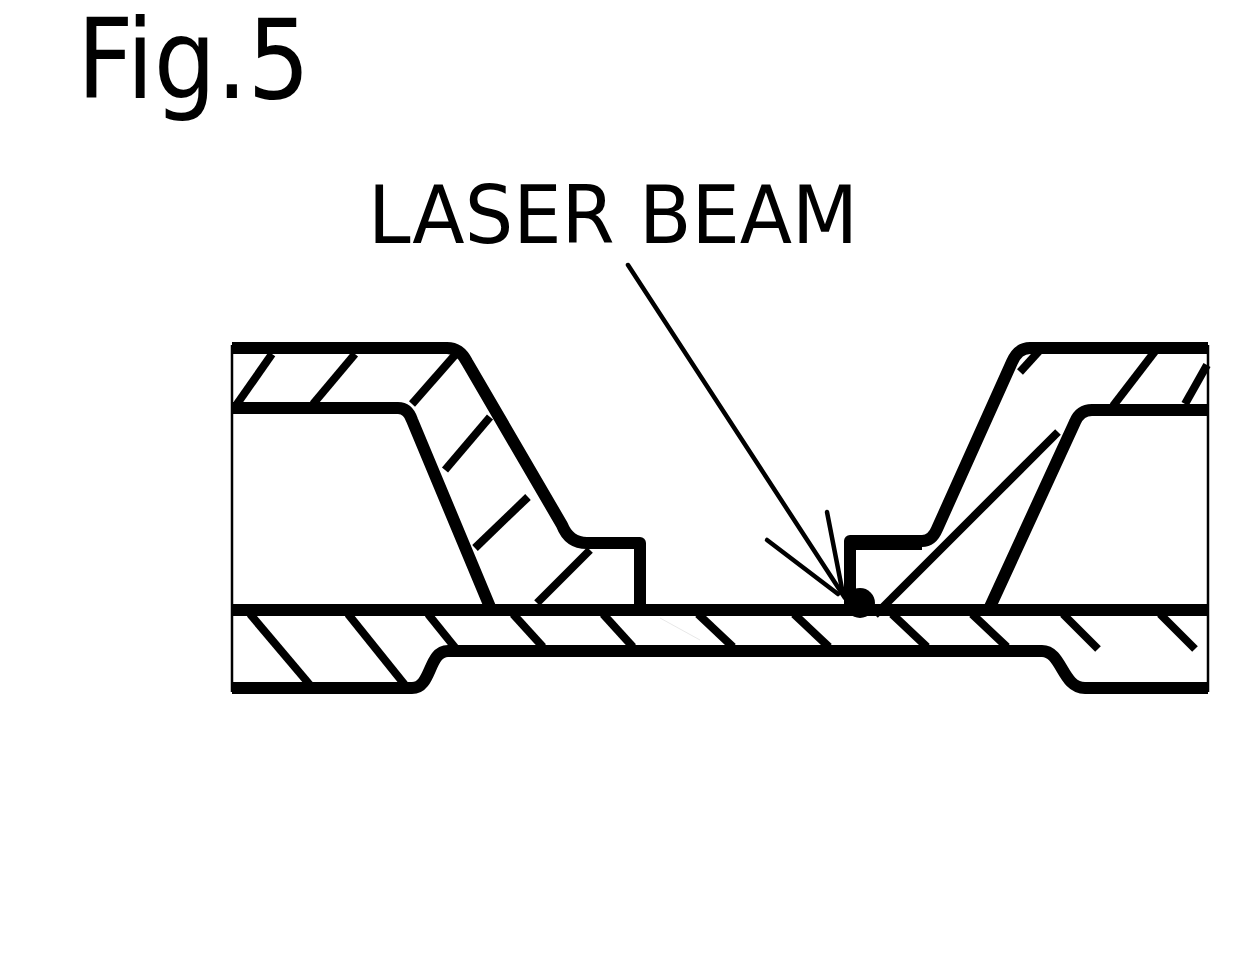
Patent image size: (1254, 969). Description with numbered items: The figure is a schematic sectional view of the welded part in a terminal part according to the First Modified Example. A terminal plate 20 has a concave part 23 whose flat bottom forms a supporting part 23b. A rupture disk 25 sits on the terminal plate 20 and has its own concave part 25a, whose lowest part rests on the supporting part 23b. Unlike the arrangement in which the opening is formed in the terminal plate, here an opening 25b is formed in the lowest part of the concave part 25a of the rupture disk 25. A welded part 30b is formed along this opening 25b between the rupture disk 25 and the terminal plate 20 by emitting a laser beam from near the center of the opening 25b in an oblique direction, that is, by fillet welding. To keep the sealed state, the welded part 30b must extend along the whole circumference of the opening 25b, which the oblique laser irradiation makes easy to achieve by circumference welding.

The terminal plate 20 is at (233, 693).
The concave part 23 is at (338, 658).
The supporting part 23b is at (677, 628).
The rupture disk 25 is at (1177, 342).
The concave part 25a is at (897, 563).
The opening 25b is at (720, 607).
The welded part 30b is at (840, 655).